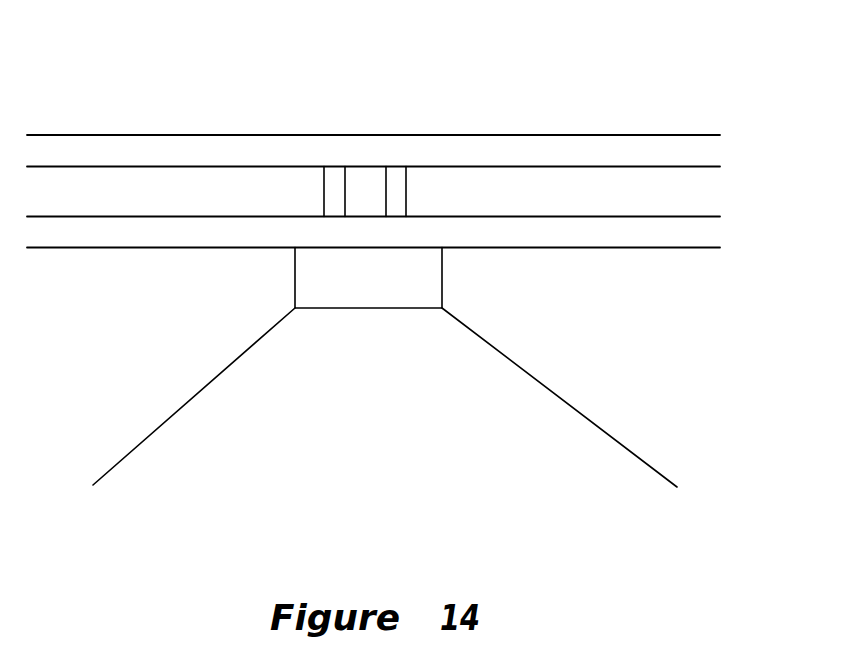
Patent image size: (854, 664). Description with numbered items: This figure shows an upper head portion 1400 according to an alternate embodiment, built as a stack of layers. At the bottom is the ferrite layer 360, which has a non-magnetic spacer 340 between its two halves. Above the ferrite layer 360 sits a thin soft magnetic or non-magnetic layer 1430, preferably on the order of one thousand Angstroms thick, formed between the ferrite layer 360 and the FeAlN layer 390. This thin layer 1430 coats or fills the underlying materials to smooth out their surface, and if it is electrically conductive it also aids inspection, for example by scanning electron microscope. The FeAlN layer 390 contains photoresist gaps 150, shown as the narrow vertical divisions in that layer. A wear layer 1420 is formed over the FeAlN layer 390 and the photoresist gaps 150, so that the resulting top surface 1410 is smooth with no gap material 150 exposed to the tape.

The upper head portion 1400 is at (699, 41).
The surface 1410 is at (115, 135).
The wear layer 1420 is at (717, 151).
The FeAlN layer 390 is at (713, 192).
The thin soft magnetic or non-magnetic layer 1430 is at (715, 238).
The photoresist gaps 150 is at (325, 193).
The non-magnetic spacer 340 is at (383, 289).
The ferrite layer 360 is at (177, 324).